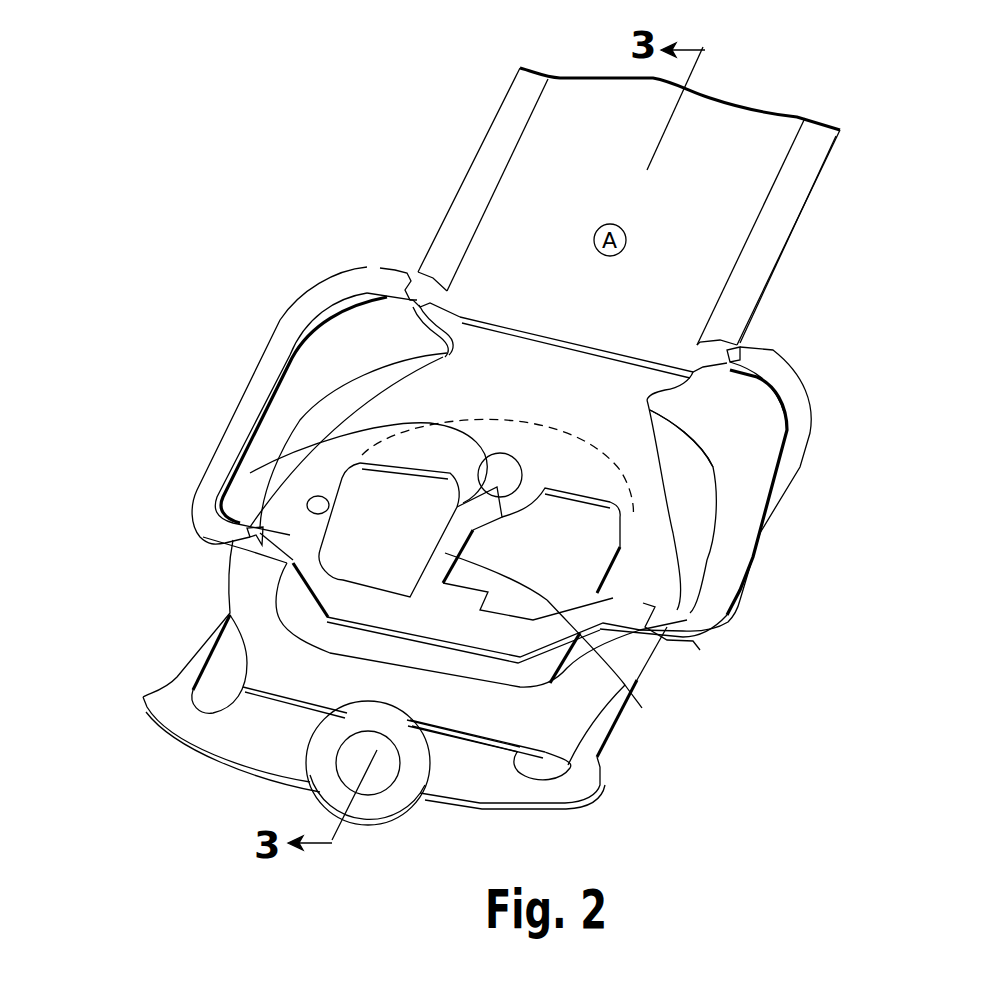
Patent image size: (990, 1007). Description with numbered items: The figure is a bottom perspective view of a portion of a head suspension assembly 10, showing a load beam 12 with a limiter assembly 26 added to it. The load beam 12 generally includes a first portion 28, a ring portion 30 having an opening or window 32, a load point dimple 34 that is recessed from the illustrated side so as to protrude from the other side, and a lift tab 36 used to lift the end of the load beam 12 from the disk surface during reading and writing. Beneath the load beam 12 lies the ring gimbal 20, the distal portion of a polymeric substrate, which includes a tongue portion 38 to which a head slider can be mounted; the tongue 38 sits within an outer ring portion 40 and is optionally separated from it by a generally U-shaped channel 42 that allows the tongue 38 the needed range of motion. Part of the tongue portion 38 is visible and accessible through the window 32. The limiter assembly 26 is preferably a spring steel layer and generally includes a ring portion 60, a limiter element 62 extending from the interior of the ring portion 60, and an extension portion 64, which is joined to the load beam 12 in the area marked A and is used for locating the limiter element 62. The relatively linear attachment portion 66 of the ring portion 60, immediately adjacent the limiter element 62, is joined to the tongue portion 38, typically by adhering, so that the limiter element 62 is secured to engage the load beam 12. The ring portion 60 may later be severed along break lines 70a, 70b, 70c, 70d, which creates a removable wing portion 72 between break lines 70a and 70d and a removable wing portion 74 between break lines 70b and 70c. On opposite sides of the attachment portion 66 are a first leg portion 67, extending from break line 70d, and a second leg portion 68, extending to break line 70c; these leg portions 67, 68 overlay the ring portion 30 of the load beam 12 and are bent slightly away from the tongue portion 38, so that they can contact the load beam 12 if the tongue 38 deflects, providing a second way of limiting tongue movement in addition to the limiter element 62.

The suspension assembly 10 is at (884, 326).
The load beam 12 is at (777, 233).
The ring gimbal 20 is at (593, 782).
The limiter assembly 26 is at (760, 550).
The first portion 28 is at (475, 190).
The ring portion 30 is at (247, 582).
The window 32 is at (320, 500).
The load point dimple 34 is at (447, 433).
The lift tab 36 is at (387, 803).
The tongue portion 38 is at (600, 573).
The outer ring portion 40 is at (700, 463).
The U-shaped channel 42 is at (557, 762).
The ring portion 60 is at (767, 500).
The limiter element 62 is at (630, 680).
The extension portion 64 is at (757, 153).
The attachment portion 66 is at (500, 633).
The first leg portion 67 is at (320, 577).
The second leg portion 68 is at (712, 608).
The break line 70a is at (367, 267).
The break line 70b is at (750, 357).
The break line 70c is at (683, 643).
The break line 70d is at (253, 537).
The removable wing portion 72 is at (280, 337).
The removable wing portion 74 is at (787, 473).